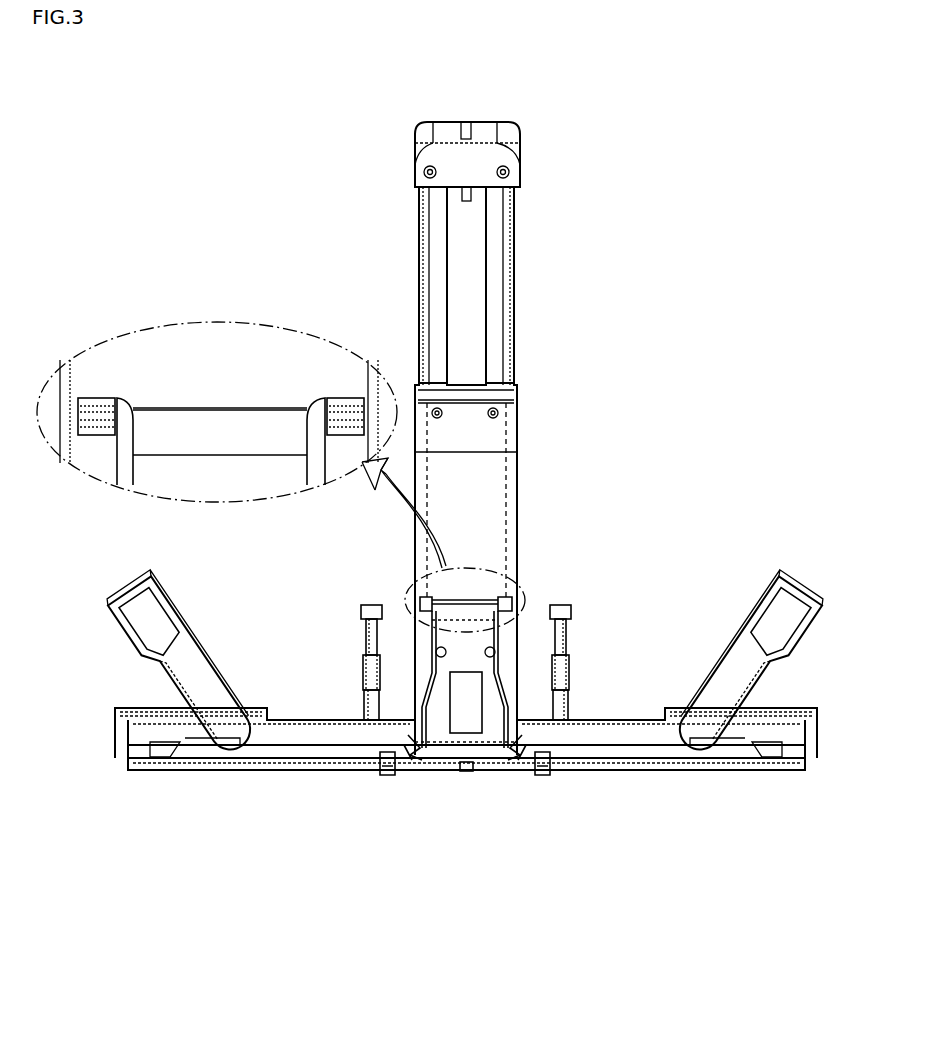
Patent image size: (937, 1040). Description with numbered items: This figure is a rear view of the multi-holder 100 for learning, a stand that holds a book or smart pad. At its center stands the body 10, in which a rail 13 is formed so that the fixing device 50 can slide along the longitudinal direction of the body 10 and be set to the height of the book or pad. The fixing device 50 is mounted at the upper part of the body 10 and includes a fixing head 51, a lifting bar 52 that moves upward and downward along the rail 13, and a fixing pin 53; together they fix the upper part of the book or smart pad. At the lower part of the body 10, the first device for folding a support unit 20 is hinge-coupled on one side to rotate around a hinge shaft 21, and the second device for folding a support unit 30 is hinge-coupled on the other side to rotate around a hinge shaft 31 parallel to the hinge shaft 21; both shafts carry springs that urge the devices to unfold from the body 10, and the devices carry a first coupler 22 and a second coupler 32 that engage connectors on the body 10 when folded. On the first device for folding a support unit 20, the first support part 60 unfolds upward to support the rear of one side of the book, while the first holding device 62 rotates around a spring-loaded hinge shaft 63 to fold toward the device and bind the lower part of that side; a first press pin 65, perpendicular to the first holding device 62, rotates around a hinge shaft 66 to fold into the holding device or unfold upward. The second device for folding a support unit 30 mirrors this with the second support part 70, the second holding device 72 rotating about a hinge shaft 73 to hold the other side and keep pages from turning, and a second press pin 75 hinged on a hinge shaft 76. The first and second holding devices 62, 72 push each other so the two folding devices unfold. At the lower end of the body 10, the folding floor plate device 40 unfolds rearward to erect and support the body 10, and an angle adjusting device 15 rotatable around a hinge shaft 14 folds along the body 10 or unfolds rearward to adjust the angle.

The multi-holder for learning 100 is at (222, 206).
The body 10 is at (519, 407).
The rail 13 is at (506, 477).
The hinge shaft 14 is at (520, 598).
The angle adjusting device 15 is at (512, 607).
The first device for folding a support unit 20 is at (127, 706).
The hinge shaft 21 is at (416, 750).
The first coupler 22 is at (383, 770).
The second device for folding a support unit 30 is at (805, 706).
The hinge shaft 31 is at (515, 752).
The second coupler 32 is at (548, 772).
The folding floor plate device 40 is at (490, 770).
The fixing device 50 is at (326, 110).
The fixing head 51 is at (460, 128).
The lifting bar 52 is at (420, 215).
The fixing pin 53 is at (420, 143).
The first support part 60 is at (147, 586).
The first holding device 62 is at (368, 668).
The hinge shaft 63 is at (365, 702).
The first press pin 65 is at (363, 606).
The hinge shaft 66 is at (366, 637).
The second support part 70 is at (790, 586).
The second holding device 72 is at (562, 670).
The hinge shaft 73 is at (566, 702).
The second press pin 75 is at (568, 606).
The hinge shaft 76 is at (565, 637).